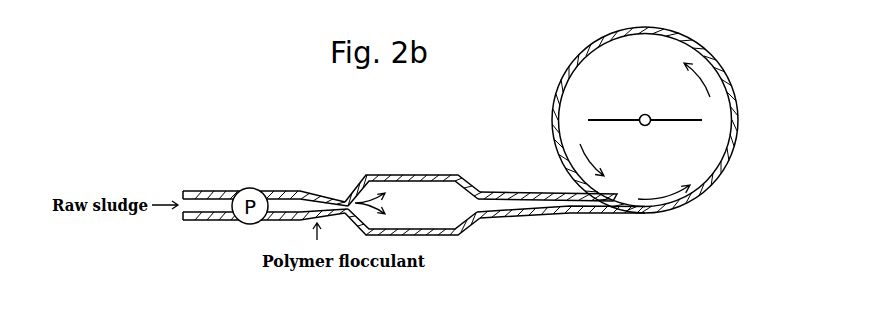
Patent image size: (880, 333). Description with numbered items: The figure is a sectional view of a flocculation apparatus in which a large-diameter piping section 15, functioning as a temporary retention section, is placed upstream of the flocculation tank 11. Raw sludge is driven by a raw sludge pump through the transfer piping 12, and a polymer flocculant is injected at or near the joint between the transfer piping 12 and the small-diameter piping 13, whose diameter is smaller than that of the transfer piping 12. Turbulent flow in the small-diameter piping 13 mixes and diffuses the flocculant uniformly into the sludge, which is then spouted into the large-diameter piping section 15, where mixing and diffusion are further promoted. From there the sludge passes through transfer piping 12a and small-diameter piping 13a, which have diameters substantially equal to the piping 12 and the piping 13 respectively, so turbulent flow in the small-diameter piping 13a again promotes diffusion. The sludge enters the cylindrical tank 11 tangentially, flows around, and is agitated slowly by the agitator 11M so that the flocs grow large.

The flocculation tank 11 is at (737, 128).
The agitator 11M is at (680, 117).
The transfer piping 12 is at (283, 191).
The small-diameter piping 13 is at (320, 194).
The transfer piping 12a is at (512, 220).
The small-diameter piping 13a is at (575, 214).
The large-diameter piping section 15 is at (443, 238).